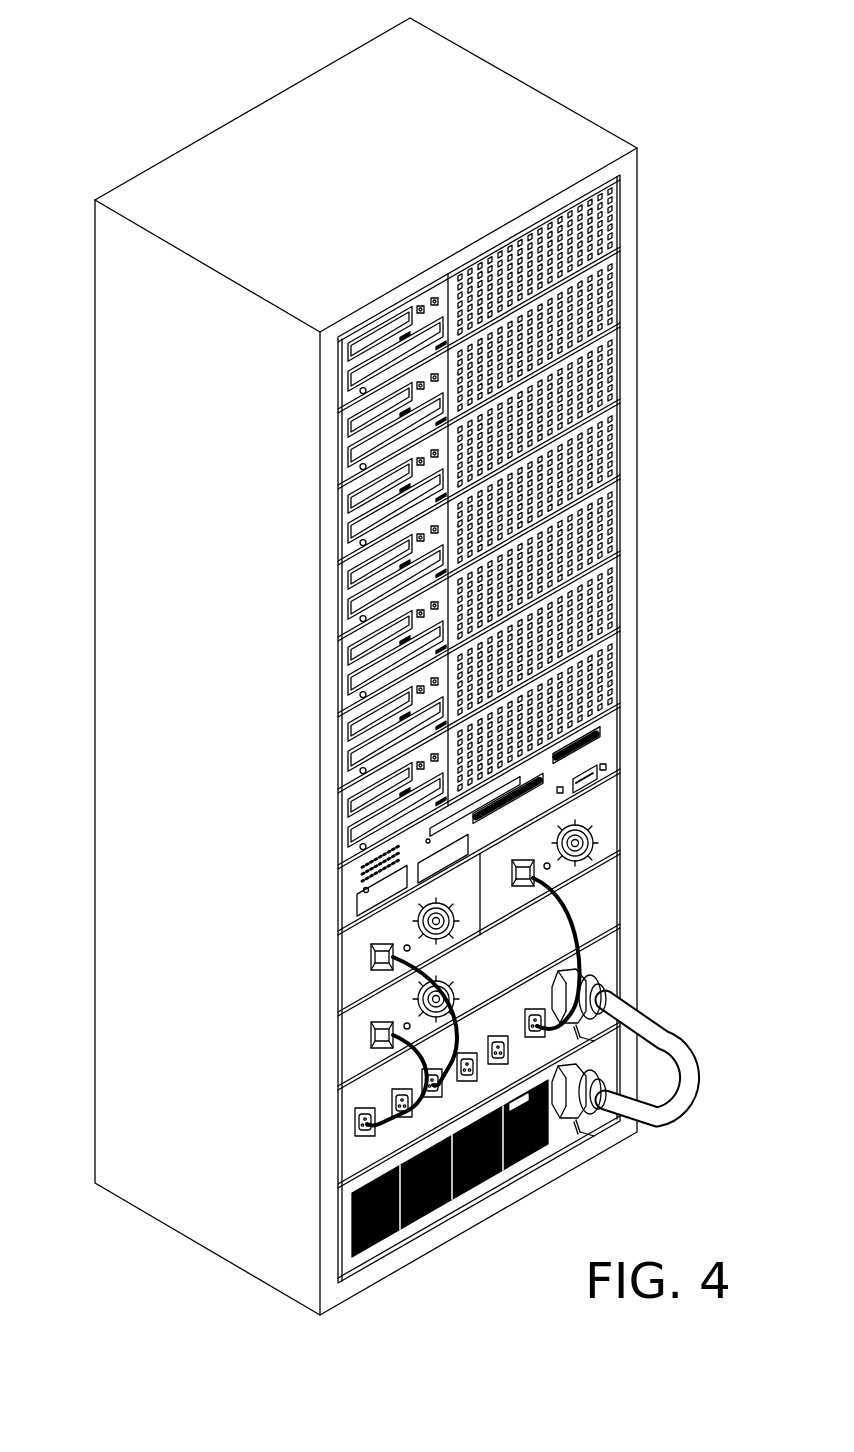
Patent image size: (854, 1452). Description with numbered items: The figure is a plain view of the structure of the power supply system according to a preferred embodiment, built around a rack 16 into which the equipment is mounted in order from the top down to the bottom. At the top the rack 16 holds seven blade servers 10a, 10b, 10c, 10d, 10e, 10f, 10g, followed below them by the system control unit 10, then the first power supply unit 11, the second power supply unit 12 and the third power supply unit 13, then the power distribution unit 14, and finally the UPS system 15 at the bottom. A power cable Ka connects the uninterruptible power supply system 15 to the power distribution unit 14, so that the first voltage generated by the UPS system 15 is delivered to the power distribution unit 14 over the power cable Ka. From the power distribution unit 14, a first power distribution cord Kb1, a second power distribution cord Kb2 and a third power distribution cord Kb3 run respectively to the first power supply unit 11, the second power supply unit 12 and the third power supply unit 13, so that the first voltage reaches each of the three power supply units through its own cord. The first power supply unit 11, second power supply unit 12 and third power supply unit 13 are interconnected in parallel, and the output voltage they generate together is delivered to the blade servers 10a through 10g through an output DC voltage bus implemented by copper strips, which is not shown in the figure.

The rack 16 is at (524, 82).
The blade server 10a is at (606, 238).
The blade server 10b is at (607, 302).
The blade server 10c is at (610, 385).
The blade server 10d is at (612, 455).
The blade server 10e is at (615, 530).
The blade server 10f is at (612, 605).
The blade server 10g is at (612, 690).
The system control unit 10 is at (602, 757).
The first power supply unit 11 is at (356, 975).
The second power supply unit 12 is at (605, 823).
The third power supply unit 13 is at (352, 1052).
The power distribution unit 14 is at (606, 972).
The UPS system 15 is at (553, 1140).
The power cable Ka is at (650, 1040).
The first power distribution cord Kb1 is at (449, 1048).
The second power distribution cord Kb2 is at (590, 907).
The third power distribution cord Kb3 is at (420, 1068).